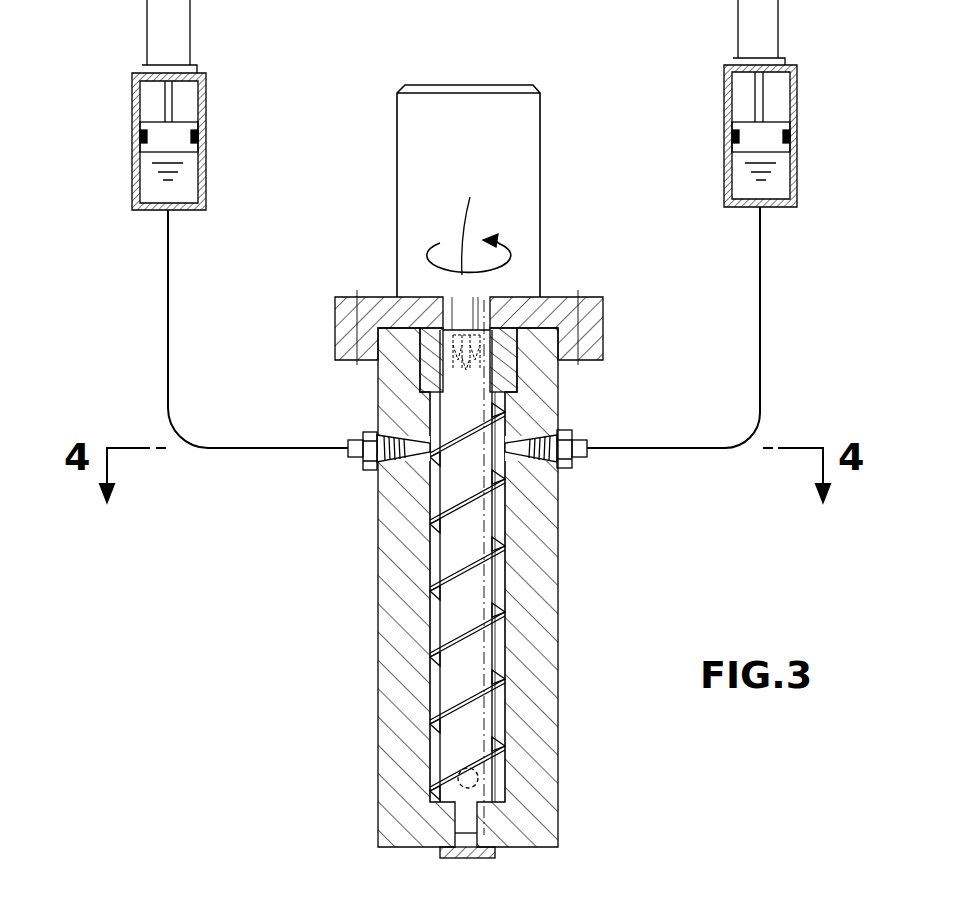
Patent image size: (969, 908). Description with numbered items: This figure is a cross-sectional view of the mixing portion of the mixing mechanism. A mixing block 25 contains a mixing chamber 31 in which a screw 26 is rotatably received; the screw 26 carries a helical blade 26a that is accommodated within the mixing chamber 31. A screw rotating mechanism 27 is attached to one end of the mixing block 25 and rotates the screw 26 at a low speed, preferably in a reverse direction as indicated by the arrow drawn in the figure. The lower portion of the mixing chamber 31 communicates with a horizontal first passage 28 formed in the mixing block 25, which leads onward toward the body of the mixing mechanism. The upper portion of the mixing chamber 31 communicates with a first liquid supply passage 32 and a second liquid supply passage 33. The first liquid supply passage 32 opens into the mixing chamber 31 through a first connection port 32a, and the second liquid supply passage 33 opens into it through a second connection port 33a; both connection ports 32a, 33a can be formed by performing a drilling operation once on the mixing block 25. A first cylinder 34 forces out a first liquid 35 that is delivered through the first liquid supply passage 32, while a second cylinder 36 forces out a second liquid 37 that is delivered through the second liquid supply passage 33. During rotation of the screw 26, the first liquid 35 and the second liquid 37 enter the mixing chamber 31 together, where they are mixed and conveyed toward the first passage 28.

The mixing block 25 is at (555, 692).
The screw 26 is at (468, 589).
The helical blade 26a is at (468, 566).
The screw rotating mechanism 27 is at (525, 183).
The first passage 28 is at (455, 796).
The mixing chamber 31 is at (428, 690).
The first liquid supply passage 32 is at (168, 366).
The second liquid supply passage 33 is at (760, 366).
The first connection port 32a is at (410, 430).
The second connection port 33a is at (520, 430).
The first cylinder 34 is at (207, 107).
The first liquid 35 is at (185, 175).
The second cylinder 36 is at (797, 95).
The second liquid 37 is at (775, 175).